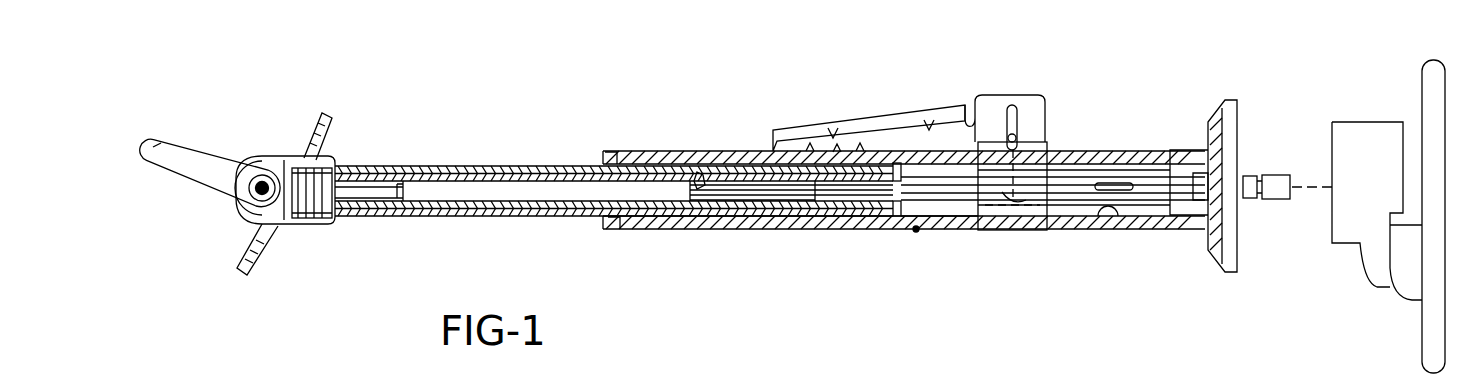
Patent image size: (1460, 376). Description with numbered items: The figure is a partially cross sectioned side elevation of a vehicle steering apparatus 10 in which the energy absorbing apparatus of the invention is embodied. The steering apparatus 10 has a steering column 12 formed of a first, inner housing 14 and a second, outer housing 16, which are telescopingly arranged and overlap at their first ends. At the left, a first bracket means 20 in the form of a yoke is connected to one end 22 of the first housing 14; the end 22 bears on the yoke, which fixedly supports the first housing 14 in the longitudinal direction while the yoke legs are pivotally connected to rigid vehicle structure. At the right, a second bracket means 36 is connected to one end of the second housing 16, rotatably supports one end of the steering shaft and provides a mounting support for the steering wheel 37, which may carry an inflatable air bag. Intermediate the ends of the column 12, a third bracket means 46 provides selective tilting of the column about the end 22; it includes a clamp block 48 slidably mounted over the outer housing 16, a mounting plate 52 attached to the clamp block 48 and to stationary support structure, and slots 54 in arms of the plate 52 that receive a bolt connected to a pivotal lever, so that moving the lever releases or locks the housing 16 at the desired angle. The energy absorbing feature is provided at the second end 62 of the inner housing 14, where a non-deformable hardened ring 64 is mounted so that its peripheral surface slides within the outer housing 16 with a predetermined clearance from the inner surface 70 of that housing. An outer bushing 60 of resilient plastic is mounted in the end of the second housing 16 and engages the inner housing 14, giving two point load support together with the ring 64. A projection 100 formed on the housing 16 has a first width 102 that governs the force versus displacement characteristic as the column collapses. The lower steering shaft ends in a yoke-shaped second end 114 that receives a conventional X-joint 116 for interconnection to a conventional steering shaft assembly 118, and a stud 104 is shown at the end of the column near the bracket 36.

The steering apparatus 10 is at (677, 17).
The steering column 12 is at (689, 236).
The first, inner housing 14 is at (490, 162).
The second, outer housing 16 is at (918, 228).
The first bracket means 20 is at (372, 103).
The end of the first housing 22 is at (330, 232).
The second bracket means 36 is at (1207, 138).
The steering wheel 37 is at (1354, 130).
The third bracket means 46 is at (864, 45).
The clamp block 48 is at (1016, 232).
The mounting plate 52 is at (890, 112).
The slots 54 is at (1017, 112).
The outer bushing 60 is at (606, 233).
The second end of the first housing 62 is at (858, 215).
The hardened ring 64 is at (903, 210).
The inner surface of the second housing 70 is at (1102, 206).
The projection 100 is at (937, 174).
The first width 102 is at (417, 190).
The stud 104 is at (1280, 195).
The second end of the second shaft 114 is at (288, 160).
The X-joint 116 is at (230, 203).
The steering shaft assembly 118 is at (183, 150).